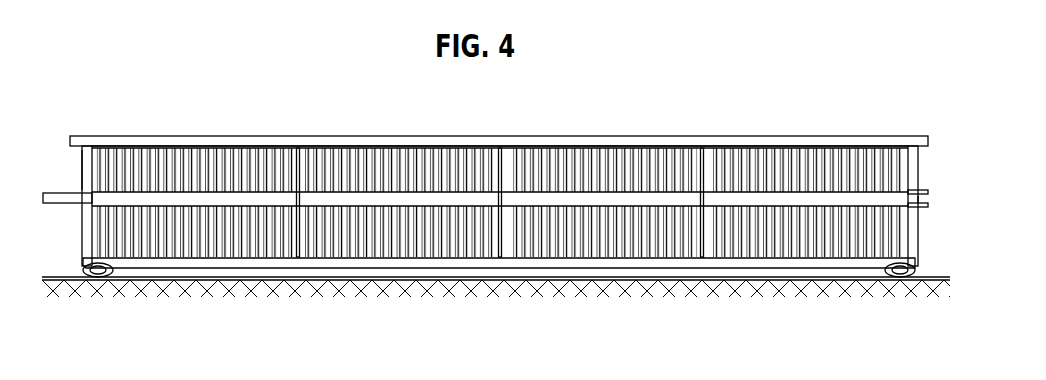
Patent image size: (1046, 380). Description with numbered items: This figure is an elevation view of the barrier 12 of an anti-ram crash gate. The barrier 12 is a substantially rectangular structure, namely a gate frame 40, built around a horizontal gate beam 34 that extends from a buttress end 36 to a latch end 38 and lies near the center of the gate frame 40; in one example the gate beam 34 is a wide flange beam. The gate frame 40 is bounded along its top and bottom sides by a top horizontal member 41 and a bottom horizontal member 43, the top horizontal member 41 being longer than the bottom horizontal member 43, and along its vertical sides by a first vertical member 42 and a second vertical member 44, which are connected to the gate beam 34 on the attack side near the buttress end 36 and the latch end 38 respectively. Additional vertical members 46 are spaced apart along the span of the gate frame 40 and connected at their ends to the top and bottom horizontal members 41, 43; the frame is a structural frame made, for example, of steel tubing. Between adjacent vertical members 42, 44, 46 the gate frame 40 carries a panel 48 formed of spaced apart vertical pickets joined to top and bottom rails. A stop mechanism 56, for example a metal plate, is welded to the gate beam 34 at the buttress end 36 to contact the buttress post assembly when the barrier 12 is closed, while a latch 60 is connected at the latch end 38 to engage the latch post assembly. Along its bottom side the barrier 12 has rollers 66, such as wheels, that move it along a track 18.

The barrier 12 is at (779, 103).
The track 18 is at (848, 281).
The gate beam 34 is at (603, 197).
The buttress end 36 is at (920, 192).
The latch end 38 is at (90, 212).
The gate frame 40 is at (262, 121).
The top horizontal member 41 is at (206, 140).
The first vertical member 42 is at (912, 158).
The bottom horizontal member 43 is at (224, 268).
The second vertical member 44 is at (90, 150).
The vertical members 46 is at (300, 152).
The panel 48 is at (383, 146).
The stop mechanism 56 is at (929, 215).
The latch 60 is at (61, 182).
The rollers 66 is at (96, 280).